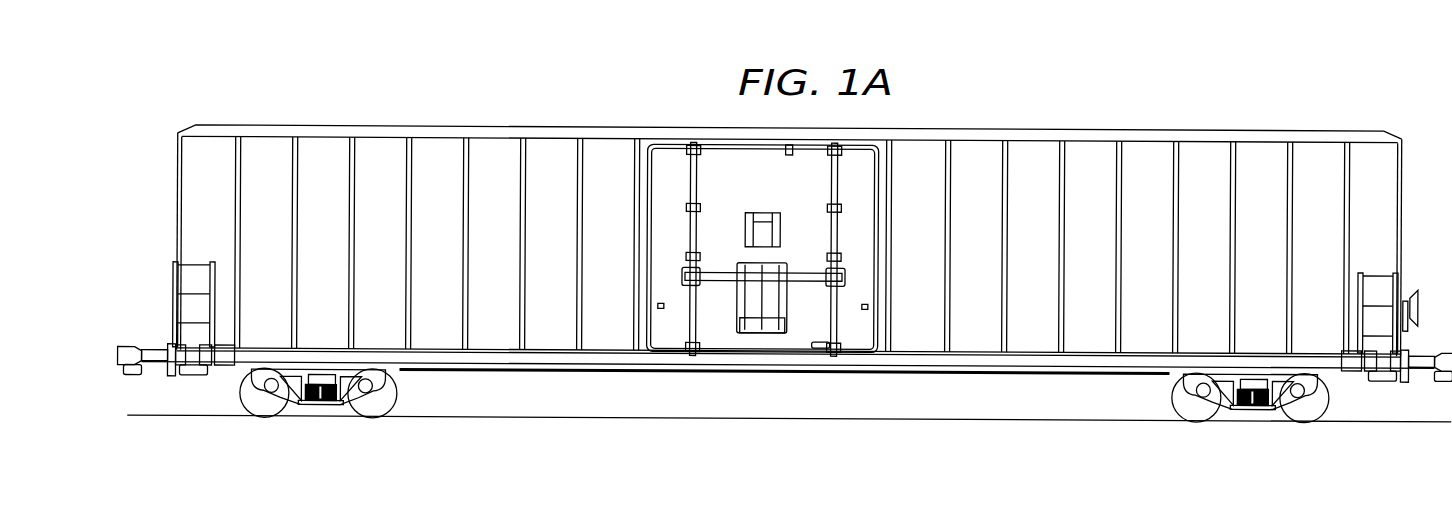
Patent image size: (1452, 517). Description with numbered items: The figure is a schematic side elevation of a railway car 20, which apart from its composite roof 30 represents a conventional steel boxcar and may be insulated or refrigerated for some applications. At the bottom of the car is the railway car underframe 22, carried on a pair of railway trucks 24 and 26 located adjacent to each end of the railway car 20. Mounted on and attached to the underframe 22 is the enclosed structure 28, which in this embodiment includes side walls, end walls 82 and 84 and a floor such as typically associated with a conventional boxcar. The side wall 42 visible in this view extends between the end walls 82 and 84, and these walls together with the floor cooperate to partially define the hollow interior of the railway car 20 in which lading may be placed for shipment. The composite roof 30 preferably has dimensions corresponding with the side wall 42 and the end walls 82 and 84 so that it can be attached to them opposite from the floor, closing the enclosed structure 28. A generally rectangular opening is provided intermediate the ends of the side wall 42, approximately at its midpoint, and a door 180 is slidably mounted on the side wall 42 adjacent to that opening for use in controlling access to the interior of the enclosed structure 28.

The railway car 20 is at (1420, 148).
The railway car underframe 22 is at (973, 370).
The railway truck 24 is at (321, 408).
The railway truck 26 is at (1249, 415).
The enclosed structure 28 is at (1085, 166).
The composite roof 30 is at (964, 127).
The side wall 42 is at (1207, 158).
The end wall 82 is at (1402, 227).
The end wall 84 is at (177, 188).
The door 180 is at (667, 168).